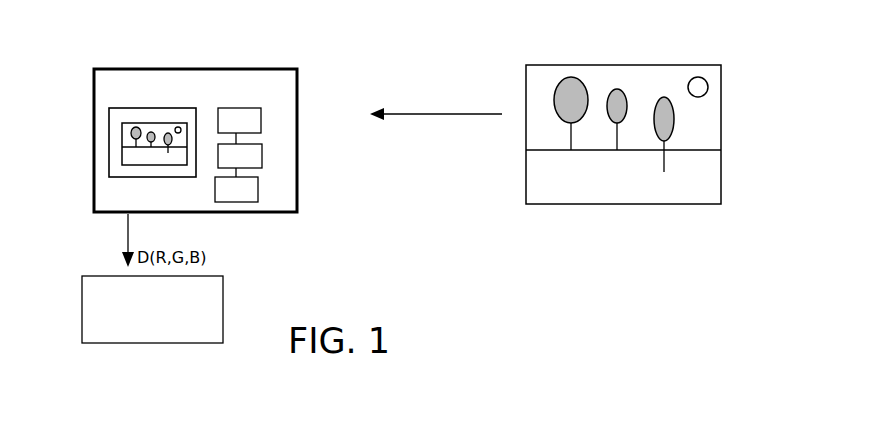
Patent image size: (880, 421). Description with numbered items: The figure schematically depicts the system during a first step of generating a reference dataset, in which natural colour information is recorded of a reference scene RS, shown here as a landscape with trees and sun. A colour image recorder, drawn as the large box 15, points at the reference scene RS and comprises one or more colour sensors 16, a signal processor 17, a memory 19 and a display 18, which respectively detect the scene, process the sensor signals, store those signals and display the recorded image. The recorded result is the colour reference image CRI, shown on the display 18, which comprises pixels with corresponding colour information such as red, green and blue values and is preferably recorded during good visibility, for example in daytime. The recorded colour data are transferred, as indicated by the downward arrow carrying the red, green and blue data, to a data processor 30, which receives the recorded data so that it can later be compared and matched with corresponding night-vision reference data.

The color reproduction instrument 15 is at (117, 68).
The colour sensors 16 is at (258, 112).
The signal processor 17 is at (255, 165).
The display 18 is at (112, 111).
The memory 19 is at (257, 193).
The data processor 30 is at (165, 311).
The colour reference image CRI is at (36, 166).
The reference scene RS is at (712, 226).